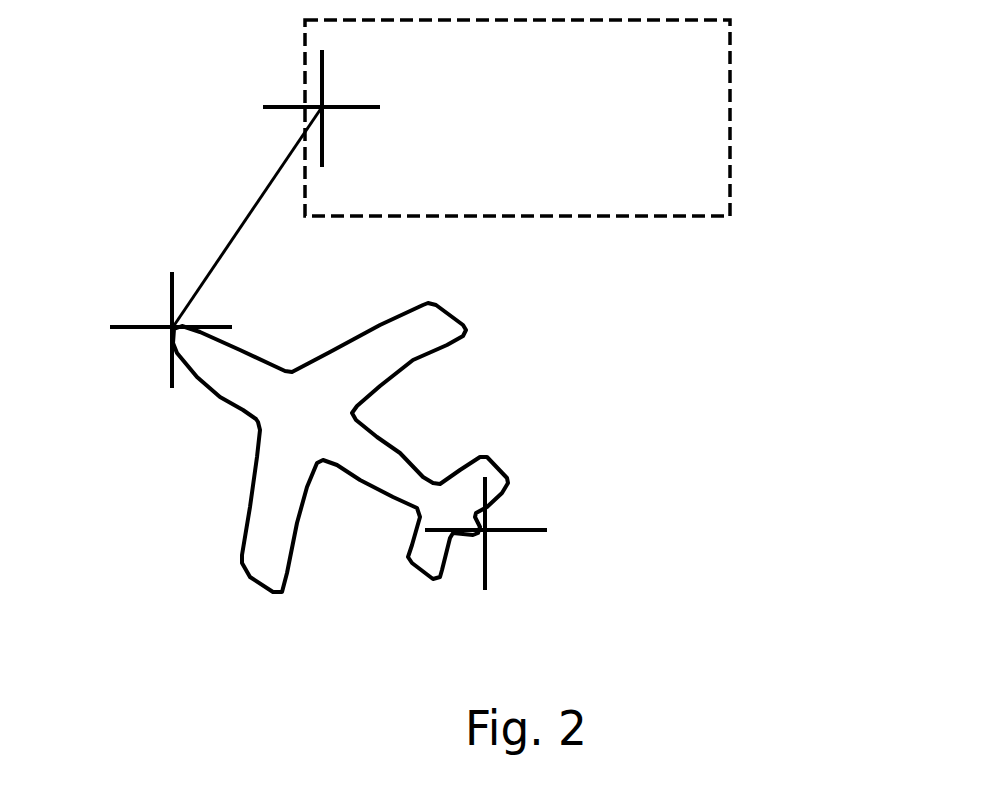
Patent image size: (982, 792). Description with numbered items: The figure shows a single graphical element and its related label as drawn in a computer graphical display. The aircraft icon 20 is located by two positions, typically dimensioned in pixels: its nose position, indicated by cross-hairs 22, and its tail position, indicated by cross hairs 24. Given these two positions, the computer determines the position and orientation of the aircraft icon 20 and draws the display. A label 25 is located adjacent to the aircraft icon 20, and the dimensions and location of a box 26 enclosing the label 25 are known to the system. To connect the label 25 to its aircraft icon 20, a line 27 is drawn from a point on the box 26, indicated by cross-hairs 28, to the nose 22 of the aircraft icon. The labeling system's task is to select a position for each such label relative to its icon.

The aircraft icon 20 is at (255, 448).
The cross-hairs 22 is at (172, 288).
The cross hairs 24 is at (490, 582).
The label 25 is at (680, 165).
The box 26 is at (693, 217).
The line 27 is at (237, 222).
The cross-hairs 28 is at (320, 65).